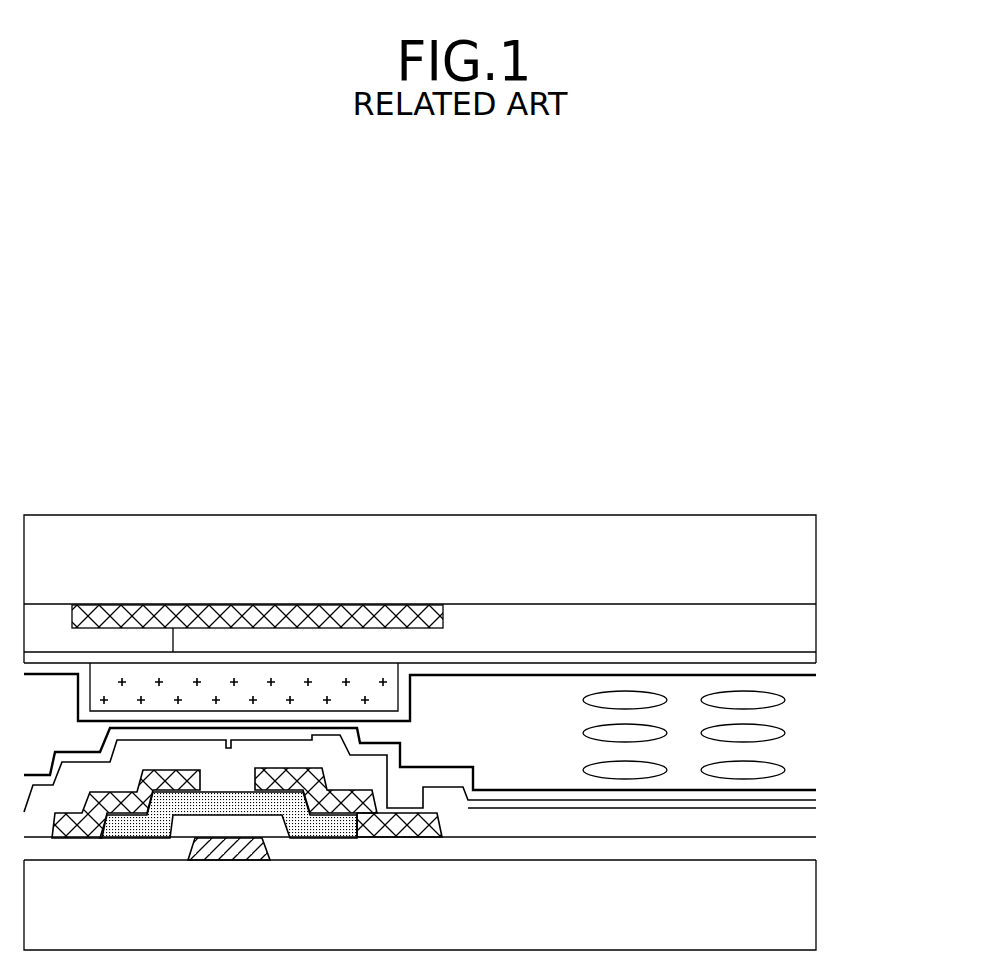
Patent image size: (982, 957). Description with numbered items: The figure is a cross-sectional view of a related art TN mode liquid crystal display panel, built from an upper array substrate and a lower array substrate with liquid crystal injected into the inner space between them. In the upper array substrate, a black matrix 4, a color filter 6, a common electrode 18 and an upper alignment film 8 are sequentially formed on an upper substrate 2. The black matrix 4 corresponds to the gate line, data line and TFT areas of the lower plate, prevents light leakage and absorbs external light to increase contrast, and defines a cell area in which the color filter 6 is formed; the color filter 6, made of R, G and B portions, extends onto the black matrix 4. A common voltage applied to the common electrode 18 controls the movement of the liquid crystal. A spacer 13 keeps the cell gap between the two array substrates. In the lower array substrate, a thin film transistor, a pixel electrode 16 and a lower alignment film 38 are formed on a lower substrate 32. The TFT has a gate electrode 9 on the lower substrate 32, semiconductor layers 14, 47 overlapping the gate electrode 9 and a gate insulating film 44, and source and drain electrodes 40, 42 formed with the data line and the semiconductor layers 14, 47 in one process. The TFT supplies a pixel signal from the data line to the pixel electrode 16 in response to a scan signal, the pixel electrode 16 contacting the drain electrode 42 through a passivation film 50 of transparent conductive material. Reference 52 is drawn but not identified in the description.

The upper substrate 2 is at (817, 565).
The black matrix 4 is at (224, 605).
The color filter 6 is at (817, 622).
The upper alignment film 8 is at (817, 676).
The gate electrode 9 is at (230, 850).
The spacer 13 is at (398, 693).
The semiconductor layer 14 is at (152, 825).
The pixel electrode 16 is at (817, 800).
The common electrode 18 is at (817, 654).
The lower substrate 32 is at (817, 885).
The lower alignment film 38 is at (817, 790).
The source electrode 40 is at (133, 803).
The drain electrode 42 is at (300, 780).
The gate insulating film 44 is at (481, 848).
The semiconductor layer 47 is at (375, 827).
The passivation film 50 is at (817, 826).
The liquid crystal molecules 52 is at (773, 733).